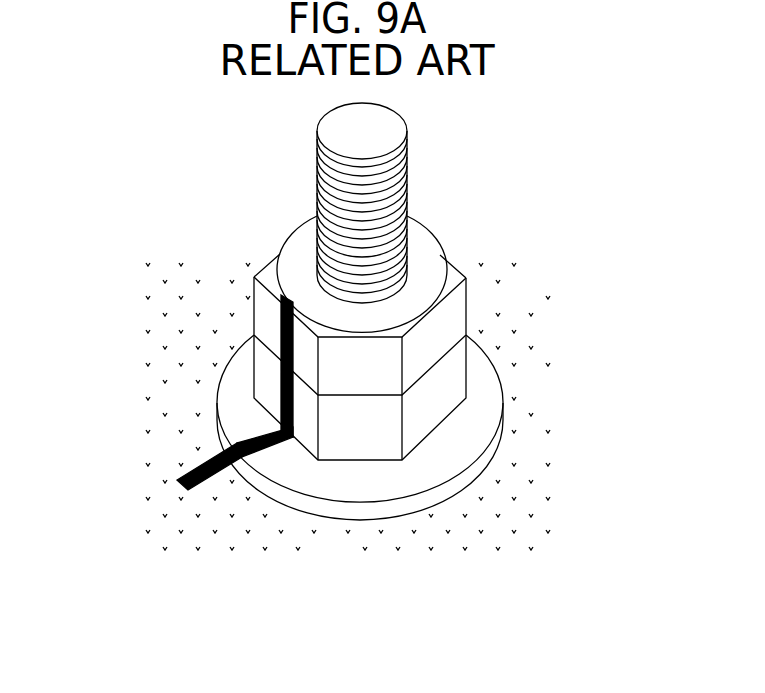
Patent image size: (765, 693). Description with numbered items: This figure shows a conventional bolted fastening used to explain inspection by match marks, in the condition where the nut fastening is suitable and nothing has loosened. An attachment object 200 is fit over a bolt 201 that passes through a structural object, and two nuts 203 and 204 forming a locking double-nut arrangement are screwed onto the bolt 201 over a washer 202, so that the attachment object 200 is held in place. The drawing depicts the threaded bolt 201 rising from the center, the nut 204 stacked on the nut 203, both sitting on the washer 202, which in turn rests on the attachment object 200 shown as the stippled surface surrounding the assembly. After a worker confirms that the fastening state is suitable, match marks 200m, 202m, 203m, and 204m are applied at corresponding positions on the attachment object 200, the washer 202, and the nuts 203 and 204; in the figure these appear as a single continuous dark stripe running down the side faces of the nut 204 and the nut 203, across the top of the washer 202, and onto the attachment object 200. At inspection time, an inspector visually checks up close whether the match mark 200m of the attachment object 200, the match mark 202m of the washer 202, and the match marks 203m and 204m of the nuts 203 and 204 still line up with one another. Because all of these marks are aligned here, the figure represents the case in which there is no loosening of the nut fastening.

The attachment object 200 is at (537, 340).
The bolt 201 is at (408, 166).
The washer 202 is at (500, 440).
The nut 203 is at (466, 387).
The nut 204 is at (467, 302).
The match mark 200m is at (195, 470).
The match mark 202m is at (248, 437).
The match mark 203m is at (292, 400).
The match mark 204m is at (254, 330).